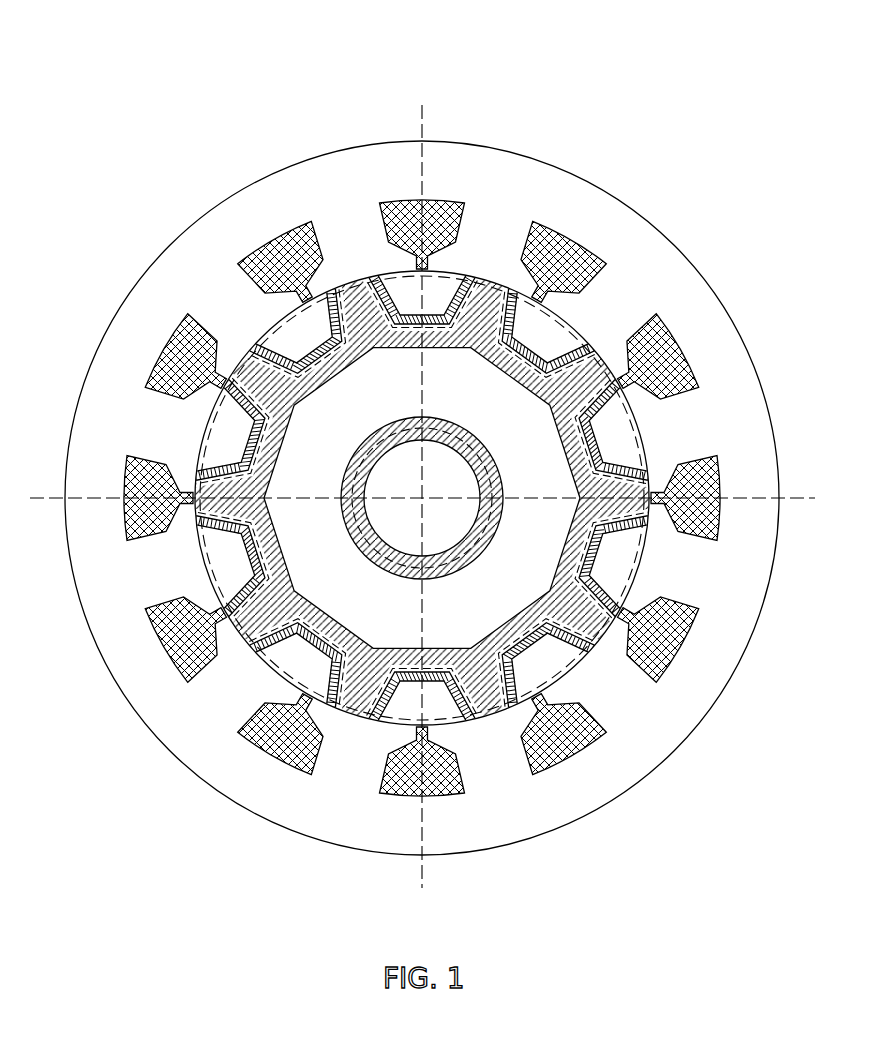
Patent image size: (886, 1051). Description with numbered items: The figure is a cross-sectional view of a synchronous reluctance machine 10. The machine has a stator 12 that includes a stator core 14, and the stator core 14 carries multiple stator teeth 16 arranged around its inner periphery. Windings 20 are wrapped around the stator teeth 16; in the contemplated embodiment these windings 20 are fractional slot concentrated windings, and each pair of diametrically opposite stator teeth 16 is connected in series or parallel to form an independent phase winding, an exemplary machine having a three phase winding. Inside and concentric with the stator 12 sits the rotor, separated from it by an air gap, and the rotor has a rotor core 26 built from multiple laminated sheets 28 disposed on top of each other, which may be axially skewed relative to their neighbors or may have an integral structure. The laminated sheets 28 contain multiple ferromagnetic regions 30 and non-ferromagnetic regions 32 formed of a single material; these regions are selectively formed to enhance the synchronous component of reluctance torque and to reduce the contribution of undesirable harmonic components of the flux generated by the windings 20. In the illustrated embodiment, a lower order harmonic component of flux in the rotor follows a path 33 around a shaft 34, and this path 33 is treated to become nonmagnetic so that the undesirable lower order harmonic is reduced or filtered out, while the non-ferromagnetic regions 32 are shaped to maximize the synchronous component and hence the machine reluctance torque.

The synchronous reluctance machine 10 is at (619, 73).
The stator 12 is at (701, 270).
The stator core 14 is at (640, 236).
The stator teeth 16 is at (492, 762).
The windings 20 is at (272, 756).
The rotor core 26 is at (303, 572).
The laminated sheets 28 is at (392, 630).
The ferromagnetic regions 30 is at (403, 285).
The non-ferromagnetic regions 32 is at (250, 350).
The path 33 is at (474, 409).
The shaft 34 is at (457, 528).